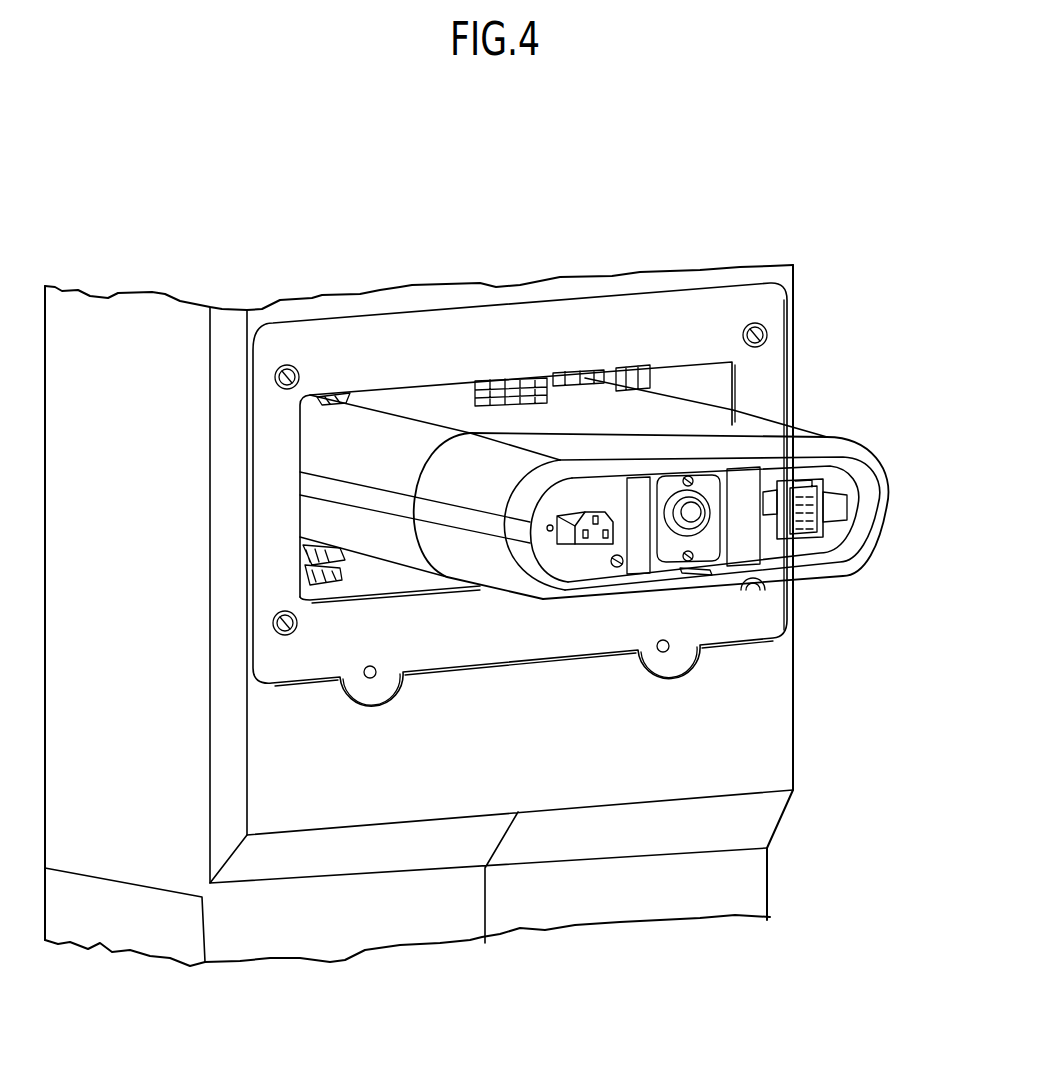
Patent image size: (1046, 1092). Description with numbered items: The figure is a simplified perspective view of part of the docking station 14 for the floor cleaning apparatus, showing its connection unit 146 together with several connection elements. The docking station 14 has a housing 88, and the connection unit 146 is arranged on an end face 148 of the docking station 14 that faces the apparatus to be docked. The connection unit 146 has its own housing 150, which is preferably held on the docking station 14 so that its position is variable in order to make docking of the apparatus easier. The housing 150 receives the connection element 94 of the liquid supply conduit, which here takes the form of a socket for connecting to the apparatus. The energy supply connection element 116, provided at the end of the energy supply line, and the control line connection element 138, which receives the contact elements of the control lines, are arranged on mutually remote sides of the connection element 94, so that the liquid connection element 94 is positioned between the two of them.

The docking station 14 is at (680, 257).
The housing 88 is at (765, 742).
The end face 148 is at (608, 772).
The housing 150 is at (687, 435).
The connection unit 146 is at (805, 424).
The energy supply connection element 116 is at (592, 517).
The connection element 94 is at (682, 507).
The control line connection element 138 is at (820, 508).